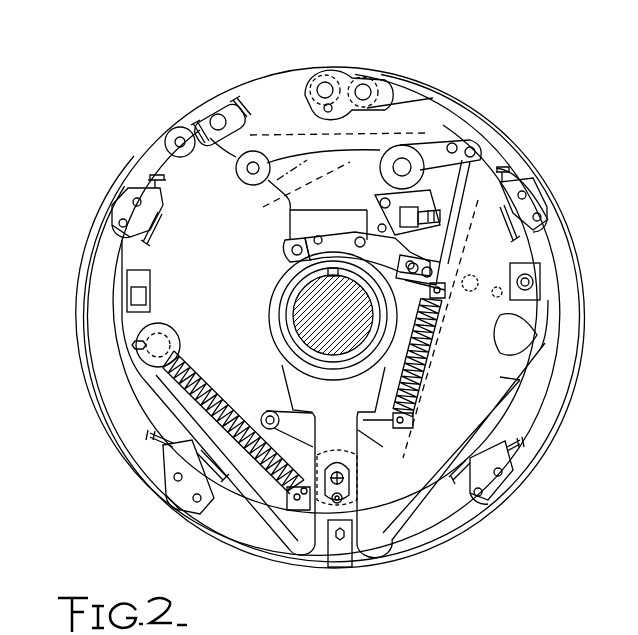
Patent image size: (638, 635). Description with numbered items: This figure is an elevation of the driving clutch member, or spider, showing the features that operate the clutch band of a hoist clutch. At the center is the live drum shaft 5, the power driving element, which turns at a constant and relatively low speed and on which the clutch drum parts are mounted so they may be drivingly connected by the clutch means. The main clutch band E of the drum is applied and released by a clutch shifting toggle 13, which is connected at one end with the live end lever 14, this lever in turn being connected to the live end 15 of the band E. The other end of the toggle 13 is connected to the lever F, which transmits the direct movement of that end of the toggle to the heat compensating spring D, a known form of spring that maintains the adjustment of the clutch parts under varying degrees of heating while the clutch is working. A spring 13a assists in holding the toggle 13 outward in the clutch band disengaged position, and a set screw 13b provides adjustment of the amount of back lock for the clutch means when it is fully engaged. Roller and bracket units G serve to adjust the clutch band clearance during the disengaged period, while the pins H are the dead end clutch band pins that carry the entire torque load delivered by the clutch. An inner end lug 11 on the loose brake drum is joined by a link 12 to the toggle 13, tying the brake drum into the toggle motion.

The live drum shaft 5 is at (300, 312).
The inner end lug 11 is at (283, 258).
The link 12 is at (380, 252).
The clutch shifting toggle 13 is at (445, 293).
The spring 13a is at (430, 353).
The set screw 13b is at (423, 217).
The live end lever 14 is at (283, 180).
The live end of the band 15 is at (160, 136).
The heat compensating spring D is at (223, 387).
The main clutch band E is at (537, 173).
The lever F is at (318, 503).
The roller and bracket units G is at (123, 210).
The dead end clutch band pins H is at (365, 93).